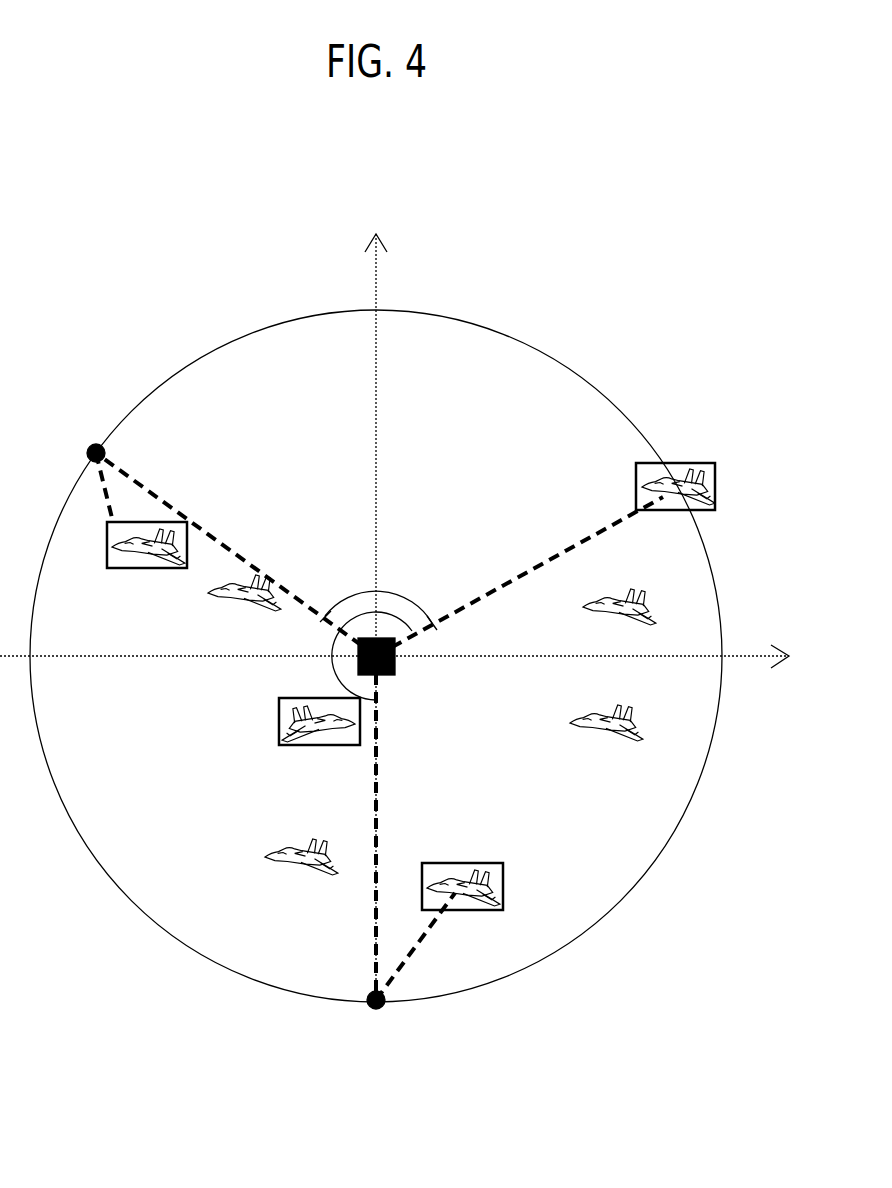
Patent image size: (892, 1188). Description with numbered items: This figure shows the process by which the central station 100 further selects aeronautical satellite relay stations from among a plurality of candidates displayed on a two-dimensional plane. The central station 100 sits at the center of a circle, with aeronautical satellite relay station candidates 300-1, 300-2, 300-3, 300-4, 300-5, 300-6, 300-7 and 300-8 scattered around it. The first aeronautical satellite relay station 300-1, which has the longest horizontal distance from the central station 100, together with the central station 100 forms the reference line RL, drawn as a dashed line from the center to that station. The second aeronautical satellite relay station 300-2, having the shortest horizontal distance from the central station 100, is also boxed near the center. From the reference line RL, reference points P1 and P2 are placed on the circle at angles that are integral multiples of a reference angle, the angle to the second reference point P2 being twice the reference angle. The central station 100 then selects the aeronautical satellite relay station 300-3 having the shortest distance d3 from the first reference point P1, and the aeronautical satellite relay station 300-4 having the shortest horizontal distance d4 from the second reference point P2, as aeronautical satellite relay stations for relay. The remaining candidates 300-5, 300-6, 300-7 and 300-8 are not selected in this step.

The central station 100 is at (399, 660).
The first aeronautical satellite relay station 300-1 is at (700, 462).
The second aeronautical satellite relay station 300-2 is at (278, 722).
The aeronautical satellite relay station 300-3 is at (127, 569).
The aeronautical satellite relay station 300-4 is at (490, 862).
The aeronautical satellite relay station candidate 300-5 is at (570, 723).
The aeronautical satellite relay station candidate 300-6 is at (583, 608).
The aeronautical satellite relay station candidate 300-7 is at (210, 596).
The aeronautical satellite relay station candidate 300-8 is at (265, 857).
The first reference point P1 is at (88, 440).
The second reference point P2 is at (366, 1012).
The shortest distance d3 is at (94, 487).
The shortest horizontal distance d4 is at (415, 946).
The reference line RL is at (519, 576).